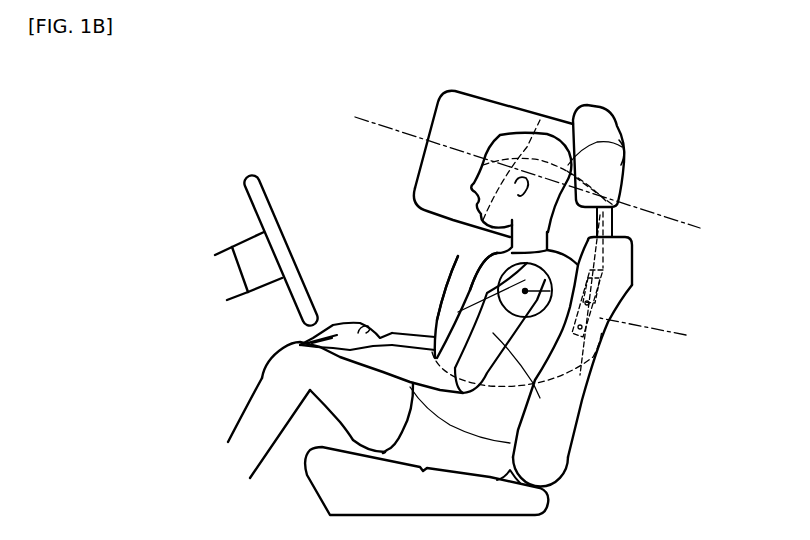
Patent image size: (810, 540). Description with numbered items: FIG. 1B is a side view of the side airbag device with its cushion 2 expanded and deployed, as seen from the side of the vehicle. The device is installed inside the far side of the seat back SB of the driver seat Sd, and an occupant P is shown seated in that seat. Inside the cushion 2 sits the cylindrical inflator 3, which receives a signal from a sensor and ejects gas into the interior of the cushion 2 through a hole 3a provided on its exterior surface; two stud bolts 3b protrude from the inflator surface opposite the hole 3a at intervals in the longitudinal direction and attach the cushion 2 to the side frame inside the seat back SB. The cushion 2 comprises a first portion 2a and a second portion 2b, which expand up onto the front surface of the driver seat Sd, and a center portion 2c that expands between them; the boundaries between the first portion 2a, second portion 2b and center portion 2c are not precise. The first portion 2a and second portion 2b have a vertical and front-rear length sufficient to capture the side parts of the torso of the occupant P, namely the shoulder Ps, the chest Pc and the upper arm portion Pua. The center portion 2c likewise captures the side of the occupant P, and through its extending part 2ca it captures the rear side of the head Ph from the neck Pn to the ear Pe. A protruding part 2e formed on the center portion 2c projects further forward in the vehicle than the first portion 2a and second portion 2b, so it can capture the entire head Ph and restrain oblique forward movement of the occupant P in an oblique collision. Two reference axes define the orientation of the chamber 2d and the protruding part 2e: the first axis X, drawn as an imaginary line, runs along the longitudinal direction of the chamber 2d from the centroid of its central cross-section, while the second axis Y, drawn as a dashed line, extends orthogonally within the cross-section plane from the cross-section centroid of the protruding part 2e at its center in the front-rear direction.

The cushion 2 is at (438, 270).
The first portion 2a is at (453, 287).
The second portion 2b is at (447, 288).
The center portion 2c is at (605, 261).
The extending part 2ca is at (568, 218).
The chamber 2d is at (450, 258).
The protruding part 2e is at (473, 105).
The inflator 3 is at (590, 307).
The hole 3a is at (613, 287).
The stud bolts 3b is at (600, 328).
The occupant P is at (477, 248).
The head Ph is at (530, 142).
The ear Pe is at (620, 150).
The neck Pn is at (540, 242).
The shoulder Ps is at (580, 357).
The chest Pc is at (535, 388).
The upper arm portion Pua is at (550, 397).
The seat back SB is at (547, 437).
The driver seat Sd is at (577, 480).
The first axis X is at (651, 335).
The second axis Y is at (382, 126).